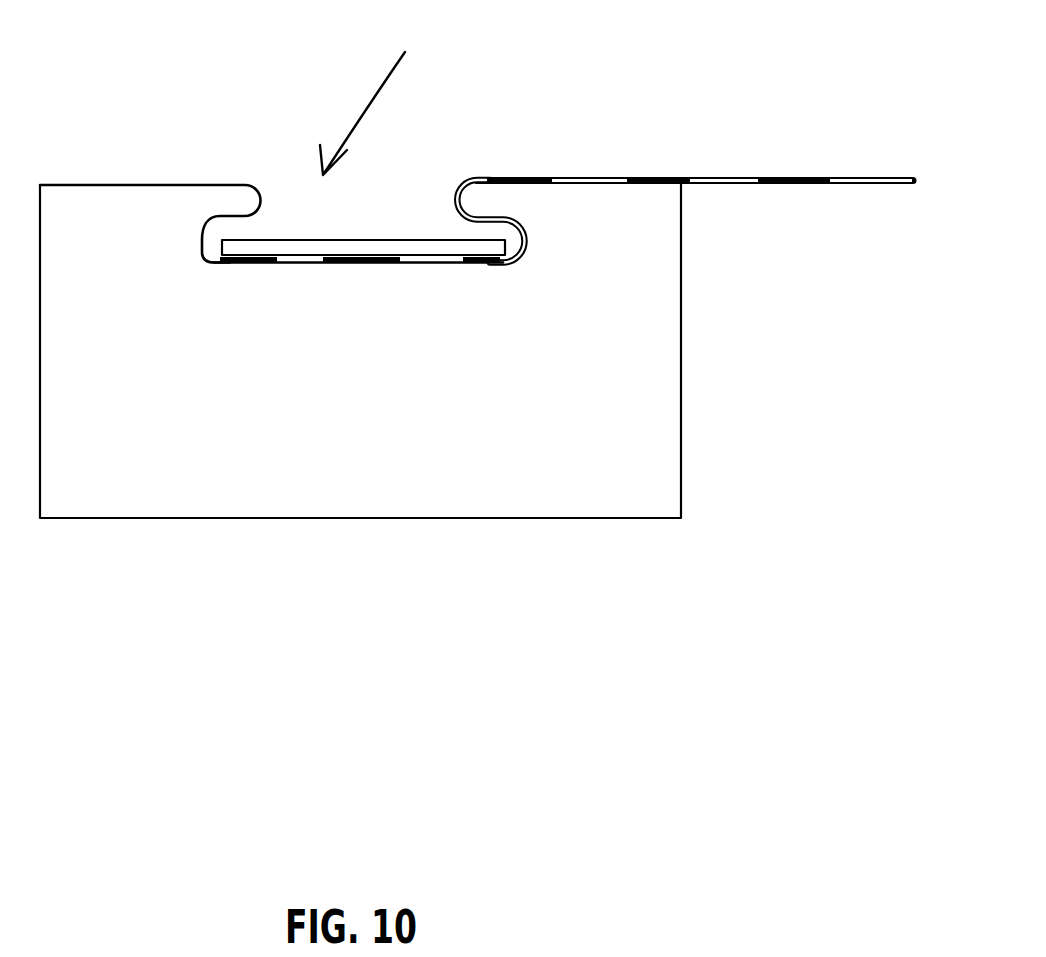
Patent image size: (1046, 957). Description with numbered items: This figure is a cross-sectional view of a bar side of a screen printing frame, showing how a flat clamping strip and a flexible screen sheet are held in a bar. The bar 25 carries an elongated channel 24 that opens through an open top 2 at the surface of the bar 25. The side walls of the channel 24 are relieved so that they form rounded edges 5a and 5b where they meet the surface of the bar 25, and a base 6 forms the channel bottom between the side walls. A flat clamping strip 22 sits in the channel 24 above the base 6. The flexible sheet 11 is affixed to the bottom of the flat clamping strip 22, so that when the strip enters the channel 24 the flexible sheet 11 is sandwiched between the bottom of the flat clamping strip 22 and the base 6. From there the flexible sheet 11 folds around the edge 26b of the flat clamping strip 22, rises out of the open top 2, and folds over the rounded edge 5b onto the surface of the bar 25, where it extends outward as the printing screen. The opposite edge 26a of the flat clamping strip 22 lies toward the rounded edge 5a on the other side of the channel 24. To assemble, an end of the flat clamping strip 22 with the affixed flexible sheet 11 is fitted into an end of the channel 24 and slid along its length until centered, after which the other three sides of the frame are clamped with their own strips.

The open top 2 is at (362, 238).
The rounded edge 5a is at (240, 203).
The rounded edge 5b is at (487, 188).
The base 6 is at (408, 277).
The flexible sheet 11 is at (717, 175).
The flat clamping strip 22 is at (345, 252).
The channel 24 is at (389, 93).
The bar 25 is at (623, 395).
The edge of flat clamping strip 26a is at (220, 252).
The edge of flat clamping strip 26b is at (513, 255).